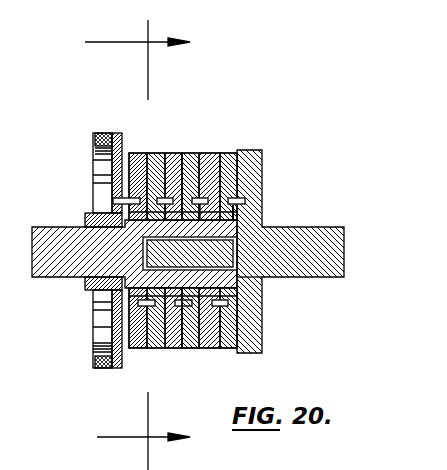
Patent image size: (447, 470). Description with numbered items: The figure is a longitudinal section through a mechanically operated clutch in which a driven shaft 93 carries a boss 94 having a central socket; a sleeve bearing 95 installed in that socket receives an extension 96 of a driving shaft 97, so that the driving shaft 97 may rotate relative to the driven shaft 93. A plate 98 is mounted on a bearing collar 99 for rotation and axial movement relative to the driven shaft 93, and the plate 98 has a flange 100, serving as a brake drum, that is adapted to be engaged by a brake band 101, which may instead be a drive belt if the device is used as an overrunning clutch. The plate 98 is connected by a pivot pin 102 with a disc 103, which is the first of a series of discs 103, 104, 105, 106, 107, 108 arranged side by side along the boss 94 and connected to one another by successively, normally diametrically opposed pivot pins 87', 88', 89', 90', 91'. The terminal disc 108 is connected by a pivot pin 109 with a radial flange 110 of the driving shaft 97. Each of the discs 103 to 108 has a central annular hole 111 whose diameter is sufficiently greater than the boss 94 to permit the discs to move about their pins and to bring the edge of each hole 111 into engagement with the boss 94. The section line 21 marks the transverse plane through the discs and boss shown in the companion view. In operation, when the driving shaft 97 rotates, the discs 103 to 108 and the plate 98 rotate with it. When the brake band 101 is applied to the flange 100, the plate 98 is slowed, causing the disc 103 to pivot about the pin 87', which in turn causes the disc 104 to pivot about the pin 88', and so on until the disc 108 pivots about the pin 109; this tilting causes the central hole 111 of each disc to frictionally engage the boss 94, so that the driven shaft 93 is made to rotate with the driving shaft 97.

The section line 21 is at (137, 245).
The pivot pin 87' is at (131, 348).
The pivot pin 88' is at (164, 173).
The pivot pin 89' is at (169, 333).
The pivot pin 90' is at (204, 171).
The pivot pin 91' is at (209, 333).
The driven shaft 93 is at (42, 228).
The boss 94 is at (215, 213).
The sleeve bearing 95 is at (238, 278).
The extension 96 is at (155, 252).
The driving shaft 97 is at (327, 230).
The plate 98 is at (95, 152).
The bearing collar 99 is at (87, 213).
The flange 100 is at (98, 312).
The brake band 101 is at (102, 133).
The pivot pin 102 is at (117, 200).
The disc 103 is at (210, 163).
The disc 104 is at (172, 346).
The disc 105 is at (182, 152).
The disc 106 is at (192, 345).
The disc 107 is at (226, 152).
The terminal disc 108 is at (233, 354).
The pivot pin 109 is at (238, 218).
The radial flange 110 is at (252, 158).
The central annular hole 111 is at (245, 201).